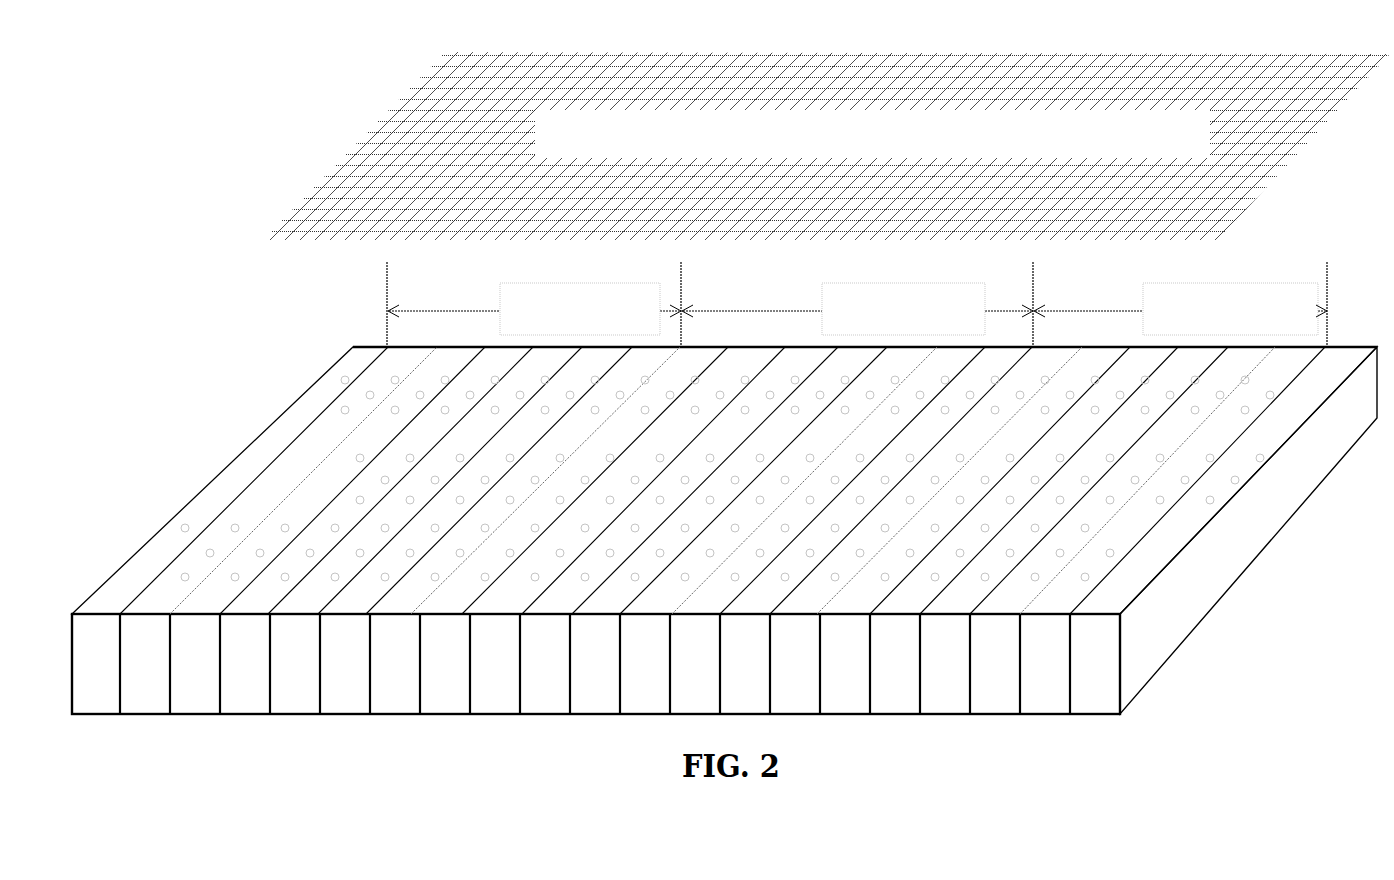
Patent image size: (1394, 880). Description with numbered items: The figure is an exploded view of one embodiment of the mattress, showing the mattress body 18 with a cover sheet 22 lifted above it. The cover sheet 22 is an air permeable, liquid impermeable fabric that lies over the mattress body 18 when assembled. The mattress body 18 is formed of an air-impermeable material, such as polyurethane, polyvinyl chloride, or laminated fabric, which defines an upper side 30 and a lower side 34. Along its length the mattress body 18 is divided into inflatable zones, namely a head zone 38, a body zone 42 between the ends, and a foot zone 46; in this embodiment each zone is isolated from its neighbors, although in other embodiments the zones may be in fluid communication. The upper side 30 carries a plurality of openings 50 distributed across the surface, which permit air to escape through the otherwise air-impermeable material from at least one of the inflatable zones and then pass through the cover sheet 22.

The mattress body 18 is at (1233, 552).
The cover sheet 22 is at (1300, 128).
The upper side 30 is at (142, 577).
The lower side 34 is at (138, 716).
The head zone 38 is at (1180, 309).
The body zone 42 is at (857, 309).
The foot zone 46 is at (534, 309).
The openings 50 is at (280, 512).